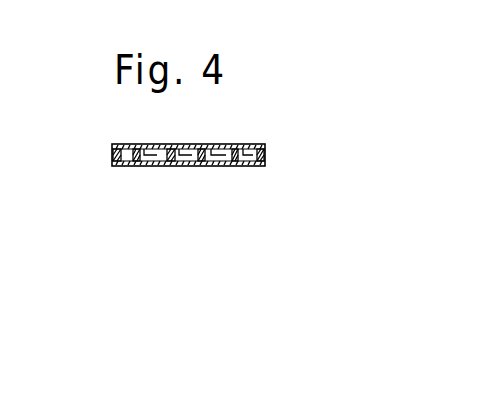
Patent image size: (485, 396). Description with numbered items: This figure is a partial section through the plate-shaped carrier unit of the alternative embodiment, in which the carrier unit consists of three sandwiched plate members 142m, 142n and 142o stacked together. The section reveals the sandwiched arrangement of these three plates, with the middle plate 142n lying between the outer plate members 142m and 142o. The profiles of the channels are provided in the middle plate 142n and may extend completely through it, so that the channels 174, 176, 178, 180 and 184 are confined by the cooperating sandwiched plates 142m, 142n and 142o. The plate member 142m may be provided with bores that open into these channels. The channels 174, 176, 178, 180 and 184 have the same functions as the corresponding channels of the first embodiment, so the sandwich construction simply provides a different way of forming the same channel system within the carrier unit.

The plate member 142m is at (128, 166).
The middle plate 142n is at (266, 152).
The plate member 142o is at (246, 143).
The channel 184 is at (111, 153).
The channel 180 is at (152, 166).
The channel 176 is at (187, 166).
The channel 178 is at (223, 166).
The channel 174 is at (246, 166).